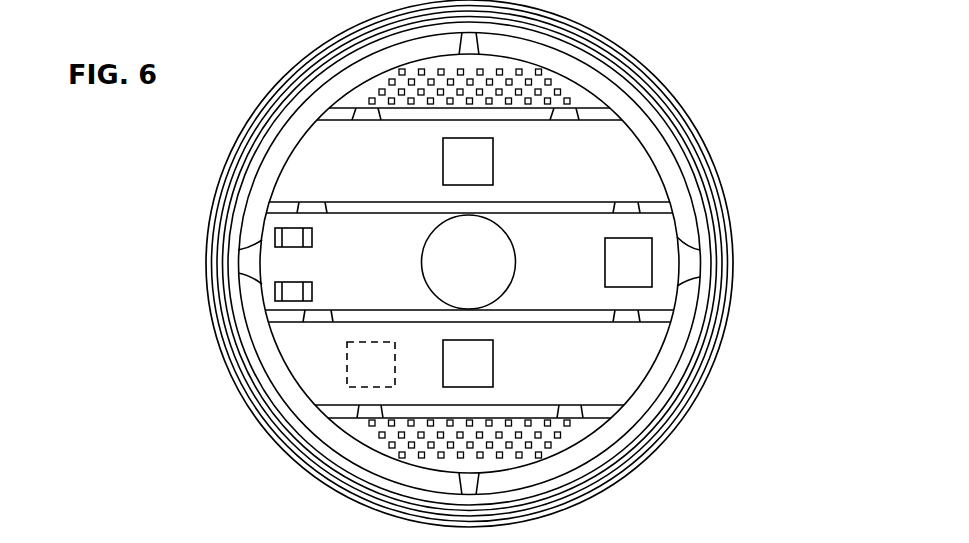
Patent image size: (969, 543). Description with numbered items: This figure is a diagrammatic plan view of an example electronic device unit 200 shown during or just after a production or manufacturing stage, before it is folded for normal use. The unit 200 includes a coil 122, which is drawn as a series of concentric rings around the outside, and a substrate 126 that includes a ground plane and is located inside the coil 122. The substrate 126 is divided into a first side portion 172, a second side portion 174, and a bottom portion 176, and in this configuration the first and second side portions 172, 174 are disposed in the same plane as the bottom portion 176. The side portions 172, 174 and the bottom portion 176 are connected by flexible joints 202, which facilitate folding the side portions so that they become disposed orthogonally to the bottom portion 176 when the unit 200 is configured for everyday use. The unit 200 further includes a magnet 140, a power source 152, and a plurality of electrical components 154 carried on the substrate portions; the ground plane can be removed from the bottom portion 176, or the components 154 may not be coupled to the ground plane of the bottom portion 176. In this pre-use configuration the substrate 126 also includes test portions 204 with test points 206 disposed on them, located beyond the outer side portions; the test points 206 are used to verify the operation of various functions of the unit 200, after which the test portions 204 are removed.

The unit 200 is at (772, 100).
The coil 122 is at (263, 425).
The substrate 126 is at (647, 377).
The test portions 204 is at (515, 62).
The test points 206 is at (548, 80).
The flexible joints 202 is at (578, 113).
The second side portion 174 is at (283, 162).
The bottom portion 176 is at (262, 297).
The first side portion 172 is at (272, 370).
The electrical components 154 is at (493, 147).
The magnet 140 is at (516, 263).
The power source 152 is at (652, 282).